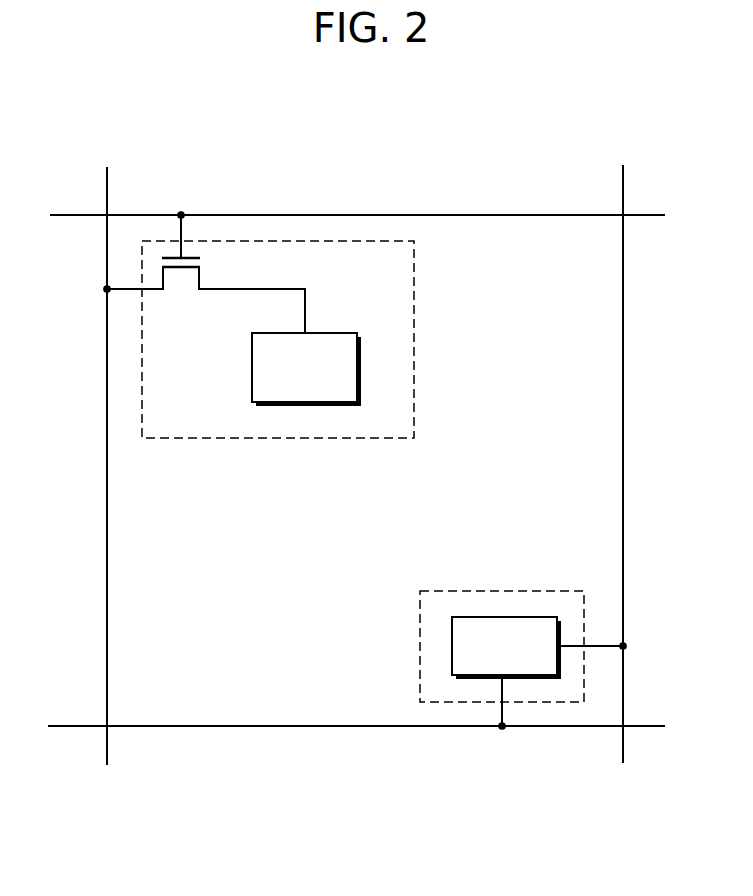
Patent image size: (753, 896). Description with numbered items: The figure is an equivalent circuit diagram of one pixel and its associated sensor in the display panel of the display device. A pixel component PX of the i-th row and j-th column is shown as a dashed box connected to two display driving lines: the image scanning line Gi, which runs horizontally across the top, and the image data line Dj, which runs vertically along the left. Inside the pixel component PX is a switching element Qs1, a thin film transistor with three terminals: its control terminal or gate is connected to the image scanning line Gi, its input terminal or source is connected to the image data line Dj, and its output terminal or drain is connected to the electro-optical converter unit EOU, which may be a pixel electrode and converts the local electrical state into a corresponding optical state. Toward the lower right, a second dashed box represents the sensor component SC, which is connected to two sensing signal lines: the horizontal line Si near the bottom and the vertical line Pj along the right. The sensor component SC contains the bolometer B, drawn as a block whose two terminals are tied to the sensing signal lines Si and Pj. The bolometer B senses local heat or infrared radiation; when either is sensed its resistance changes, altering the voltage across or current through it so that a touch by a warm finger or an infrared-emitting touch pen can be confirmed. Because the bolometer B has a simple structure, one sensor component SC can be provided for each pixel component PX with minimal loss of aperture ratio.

The image data line Dj is at (108, 450).
The image scanning line Gi is at (345, 214).
The sensing signal line Pj is at (619, 479).
The sensing signal line Si is at (366, 728).
The pixel component PX is at (414, 387).
The switching element Qs1 is at (204, 272).
The electro-optical converter unit EOU is at (306, 369).
The sensor component SC is at (522, 591).
The bolometer B is at (539, 673).